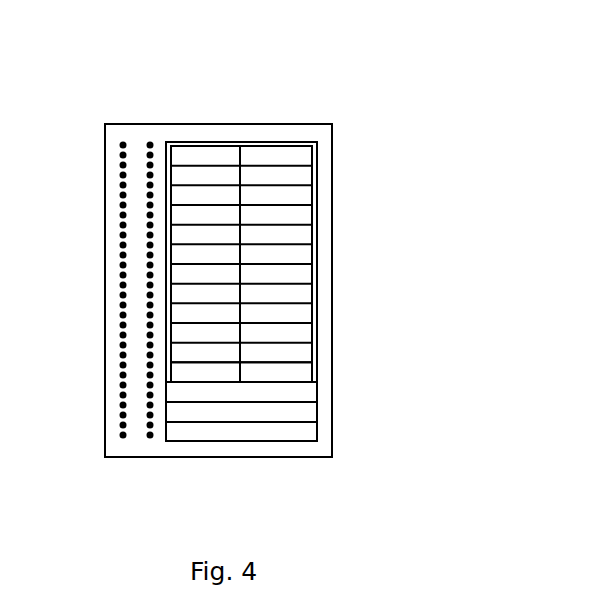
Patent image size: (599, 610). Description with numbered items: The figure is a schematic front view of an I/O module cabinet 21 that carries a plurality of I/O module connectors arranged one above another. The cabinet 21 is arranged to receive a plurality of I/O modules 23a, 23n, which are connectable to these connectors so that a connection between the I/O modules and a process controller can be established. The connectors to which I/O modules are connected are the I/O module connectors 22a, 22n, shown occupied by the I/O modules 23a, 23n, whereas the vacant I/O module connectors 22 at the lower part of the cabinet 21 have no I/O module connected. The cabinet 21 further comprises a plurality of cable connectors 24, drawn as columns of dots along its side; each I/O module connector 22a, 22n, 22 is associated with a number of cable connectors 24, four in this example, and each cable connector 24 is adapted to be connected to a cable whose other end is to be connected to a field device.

The I/O module cabinet 21 is at (332, 300).
The vacant I/O module connector 22 is at (300, 392).
The I/O module connector 22a is at (316, 147).
The I/O module connector 22n is at (316, 378).
The I/O module 23a is at (295, 155).
The I/O module 23n is at (312, 376).
The cable connector 24 is at (116, 138).